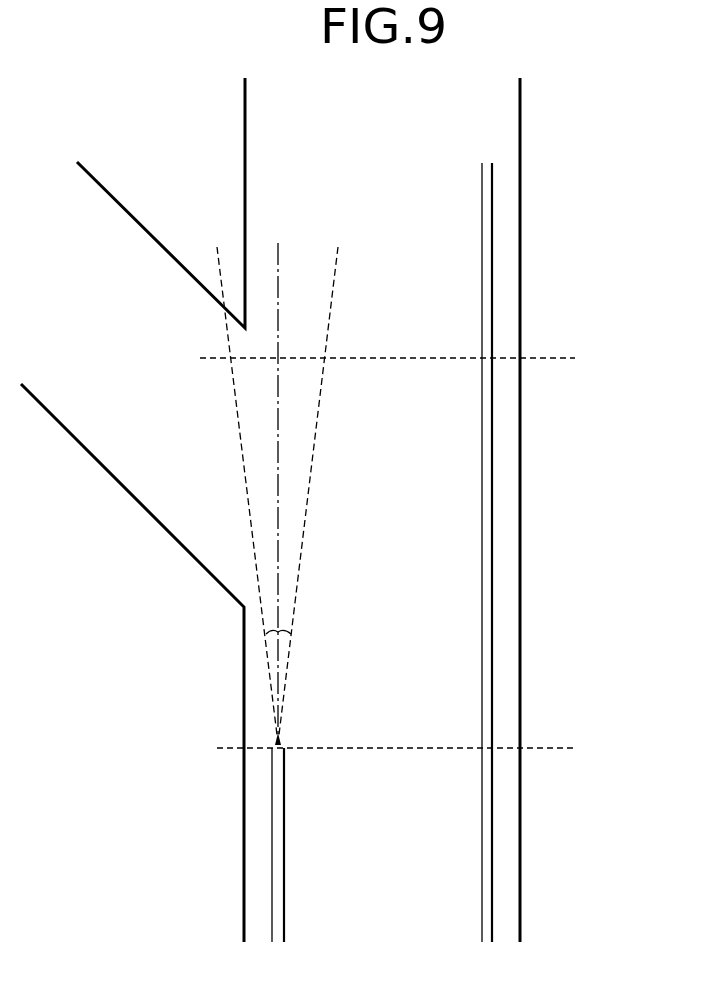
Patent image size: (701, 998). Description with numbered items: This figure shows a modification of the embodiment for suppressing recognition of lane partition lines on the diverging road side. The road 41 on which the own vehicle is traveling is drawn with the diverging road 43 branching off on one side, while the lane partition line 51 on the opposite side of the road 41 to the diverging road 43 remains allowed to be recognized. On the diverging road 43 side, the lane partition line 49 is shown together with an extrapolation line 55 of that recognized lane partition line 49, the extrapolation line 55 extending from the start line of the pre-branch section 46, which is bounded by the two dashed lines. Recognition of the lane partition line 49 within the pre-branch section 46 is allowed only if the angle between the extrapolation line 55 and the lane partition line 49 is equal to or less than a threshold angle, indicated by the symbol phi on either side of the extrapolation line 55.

The road 41 is at (450, 130).
The diverging road 43 is at (105, 222).
The pre-branch section 46 is at (588, 358).
The lane partition line 49 is at (278, 830).
The lane partition line 51 is at (487, 513).
The extrapolation line 55 is at (280, 282).